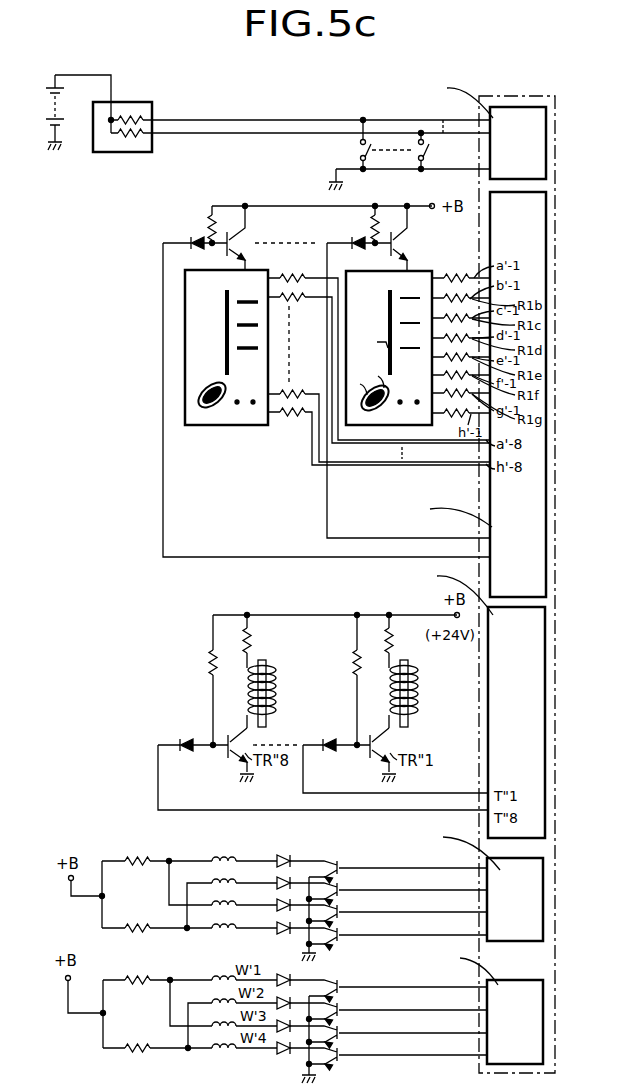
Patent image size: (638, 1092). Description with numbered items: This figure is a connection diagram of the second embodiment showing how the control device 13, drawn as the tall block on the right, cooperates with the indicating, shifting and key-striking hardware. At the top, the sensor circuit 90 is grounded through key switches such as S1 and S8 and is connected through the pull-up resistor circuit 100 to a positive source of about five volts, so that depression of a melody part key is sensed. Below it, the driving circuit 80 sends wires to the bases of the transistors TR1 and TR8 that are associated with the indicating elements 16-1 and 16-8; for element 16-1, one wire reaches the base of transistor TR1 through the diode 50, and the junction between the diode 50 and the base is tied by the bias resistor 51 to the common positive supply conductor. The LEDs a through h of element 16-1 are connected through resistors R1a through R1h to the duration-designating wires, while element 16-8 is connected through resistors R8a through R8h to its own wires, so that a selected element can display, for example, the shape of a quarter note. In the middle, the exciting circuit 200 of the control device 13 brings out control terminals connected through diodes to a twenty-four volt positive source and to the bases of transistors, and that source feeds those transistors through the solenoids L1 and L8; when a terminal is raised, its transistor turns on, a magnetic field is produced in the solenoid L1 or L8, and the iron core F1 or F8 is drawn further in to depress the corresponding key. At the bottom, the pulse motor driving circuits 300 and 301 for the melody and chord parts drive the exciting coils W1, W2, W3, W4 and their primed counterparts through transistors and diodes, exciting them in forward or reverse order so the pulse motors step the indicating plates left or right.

The pull-up resistor circuit 100 is at (151, 104).
The sensor circuit 90 is at (530, 156).
The driving circuit 80 is at (531, 565).
The control device 13 is at (560, 266).
The exciting circuit 200 is at (535, 737).
The pulse motor driving circuit 300 is at (535, 911).
The pulse motor driving circuit 301 is at (529, 1030).
The diode 50 is at (356, 240).
The bias resistor 51 is at (379, 222).
The indicating element 16-8 is at (231, 270).
The indicating element 16-1 is at (392, 270).
The transistor TR8 is at (243, 238).
The transistor TR1 is at (399, 243).
The resistor R8a is at (294, 276).
The resistor R8h is at (293, 420).
The resistor R1a is at (458, 276).
The resistor R1h is at (451, 416).
The switch S8 is at (369, 151).
The switch S1 is at (428, 150).
The solenoid L8 is at (278, 703).
The solenoid L1 is at (419, 703).
The iron core F8 is at (277, 672).
The iron core F1 is at (418, 672).
The exciting coil W1 is at (227, 851).
The exciting coil W2 is at (231, 874).
The exciting coil W3 is at (232, 896).
The exciting coil W4 is at (232, 918).